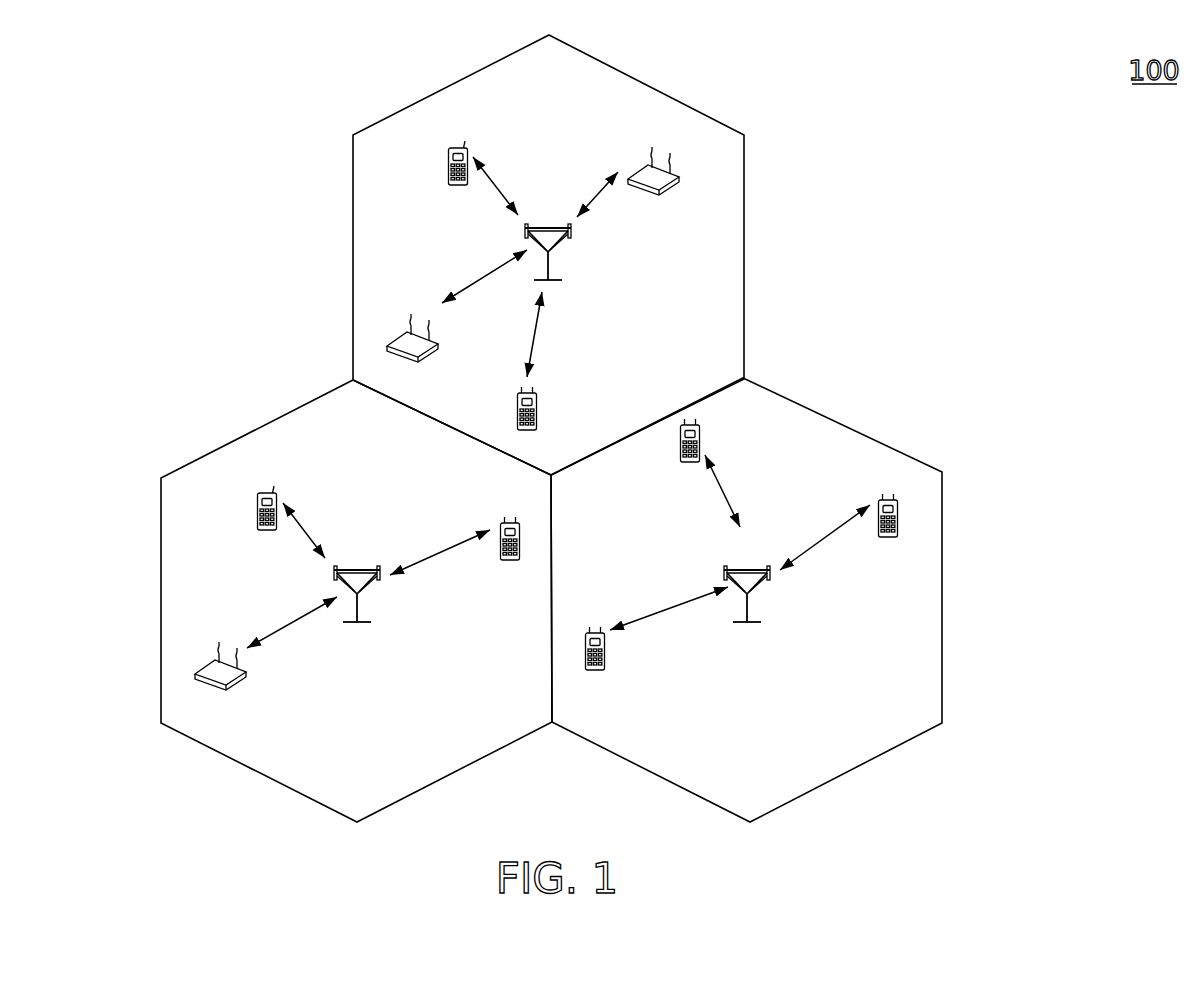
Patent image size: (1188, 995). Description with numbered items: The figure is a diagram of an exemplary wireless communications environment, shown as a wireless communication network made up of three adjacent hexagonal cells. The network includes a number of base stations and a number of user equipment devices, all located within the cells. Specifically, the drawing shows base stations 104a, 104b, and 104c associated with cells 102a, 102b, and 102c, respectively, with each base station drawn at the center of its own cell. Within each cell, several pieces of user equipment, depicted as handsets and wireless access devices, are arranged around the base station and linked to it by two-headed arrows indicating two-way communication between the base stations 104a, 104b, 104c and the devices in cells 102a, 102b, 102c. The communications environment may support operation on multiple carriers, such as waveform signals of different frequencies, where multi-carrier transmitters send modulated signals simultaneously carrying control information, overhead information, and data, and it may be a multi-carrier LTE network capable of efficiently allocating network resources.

The cell 102a is at (658, 90).
The cell 102b is at (245, 433).
The cell 102c is at (861, 433).
The base station 104a is at (550, 227).
The base station 104b is at (357, 569).
The base station 104c is at (752, 569).